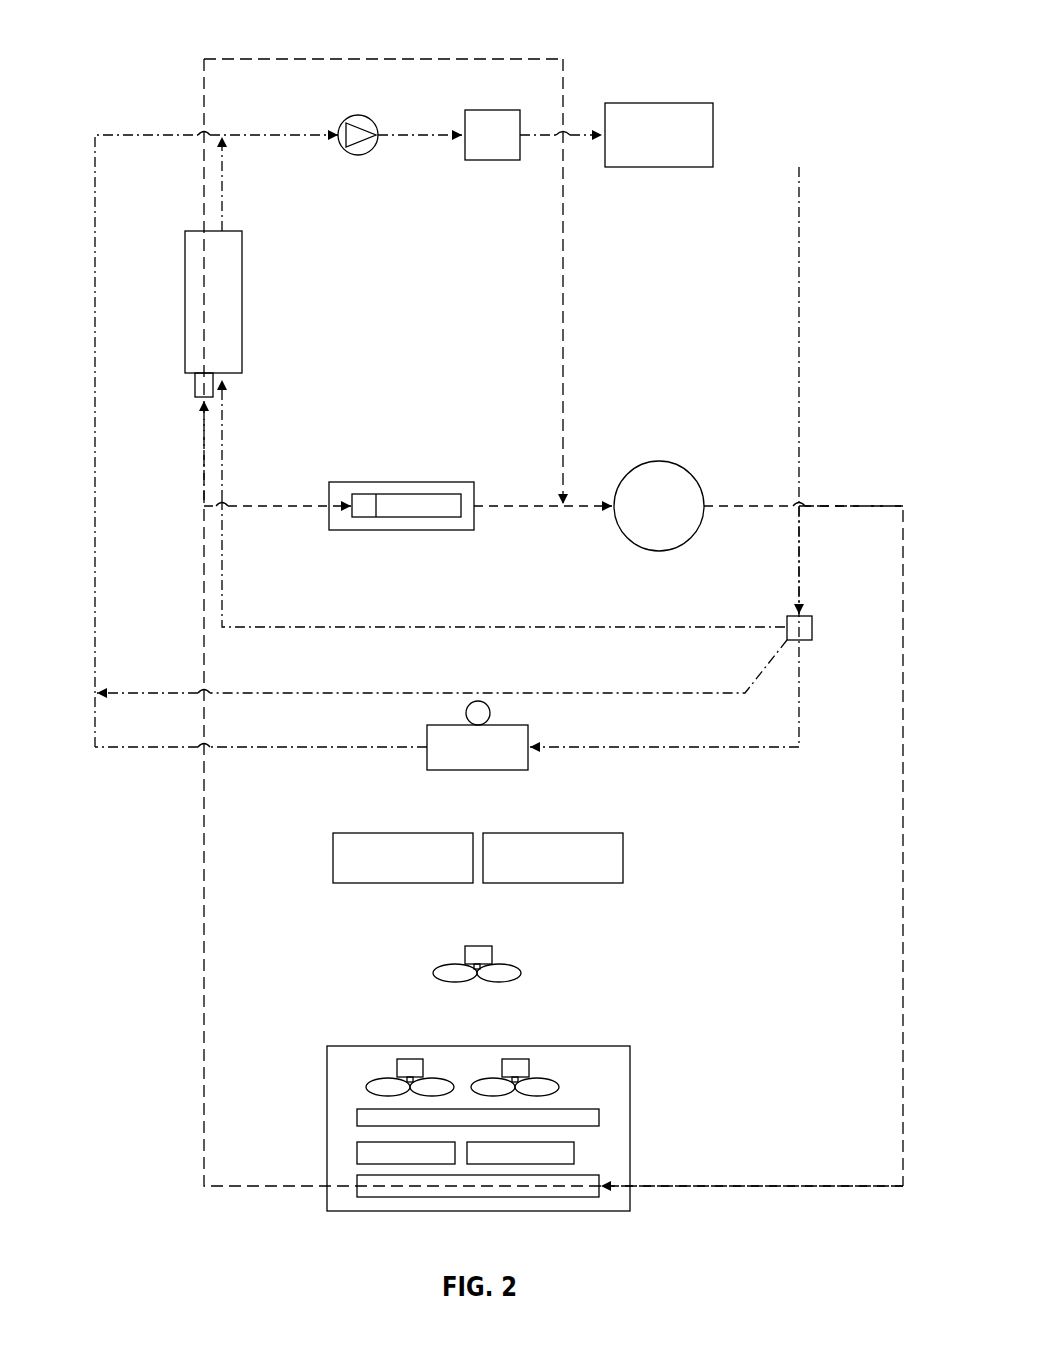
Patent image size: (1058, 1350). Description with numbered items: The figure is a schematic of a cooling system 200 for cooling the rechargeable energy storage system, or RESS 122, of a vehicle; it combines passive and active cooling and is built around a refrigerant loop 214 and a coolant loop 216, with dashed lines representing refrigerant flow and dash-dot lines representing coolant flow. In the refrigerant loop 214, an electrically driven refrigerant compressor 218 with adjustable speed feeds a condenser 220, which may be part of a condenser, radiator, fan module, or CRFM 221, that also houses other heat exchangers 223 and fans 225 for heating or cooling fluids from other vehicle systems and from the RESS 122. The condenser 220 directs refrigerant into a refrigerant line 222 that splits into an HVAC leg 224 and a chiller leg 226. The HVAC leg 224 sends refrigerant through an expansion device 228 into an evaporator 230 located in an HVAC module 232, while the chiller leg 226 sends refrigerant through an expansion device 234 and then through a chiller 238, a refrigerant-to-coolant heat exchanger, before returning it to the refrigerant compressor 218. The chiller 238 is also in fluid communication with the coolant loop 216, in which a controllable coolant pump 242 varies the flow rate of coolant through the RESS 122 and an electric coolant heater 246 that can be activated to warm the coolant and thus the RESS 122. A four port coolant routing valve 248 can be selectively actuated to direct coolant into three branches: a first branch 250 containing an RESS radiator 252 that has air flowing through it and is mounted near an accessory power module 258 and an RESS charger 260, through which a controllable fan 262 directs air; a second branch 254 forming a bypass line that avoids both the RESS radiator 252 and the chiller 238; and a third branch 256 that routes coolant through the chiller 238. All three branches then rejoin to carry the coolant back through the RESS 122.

The cooling system 200 is at (822, 38).
The RESS 122 is at (682, 103).
The refrigerant loop 214 is at (870, 506).
The coolant loop 216 is at (142, 135).
The refrigerant compressor 218 is at (659, 551).
The condenser 220 is at (558, 1198).
The condenser, radiator, fan module (CRFM) 221 is at (352, 1212).
The refrigerant line 222 is at (204, 955).
The heat exchangers 223 is at (609, 1137).
The HVAC leg 224 is at (261, 508).
The fans 225 is at (407, 1059).
The chiller leg 226 is at (565, 292).
The expansion device 228 is at (366, 494).
The evaporator 230 is at (420, 494).
The HVAC module 232 is at (440, 531).
The expansion device 234 is at (195, 386).
The chiller 238 is at (185, 305).
The coolant pump 242 is at (361, 119).
The electric coolant heater 246 is at (494, 110).
The four port coolant routing valve 248 is at (812, 628).
The first branch 250 is at (765, 748).
The RESS radiator 252 is at (478, 771).
The second branch 254 is at (685, 693).
The third branch 256 is at (623, 628).
The accessory power module 258 is at (623, 857).
The RESS charger 260 is at (333, 857).
The controllable fan 262 is at (520, 975).